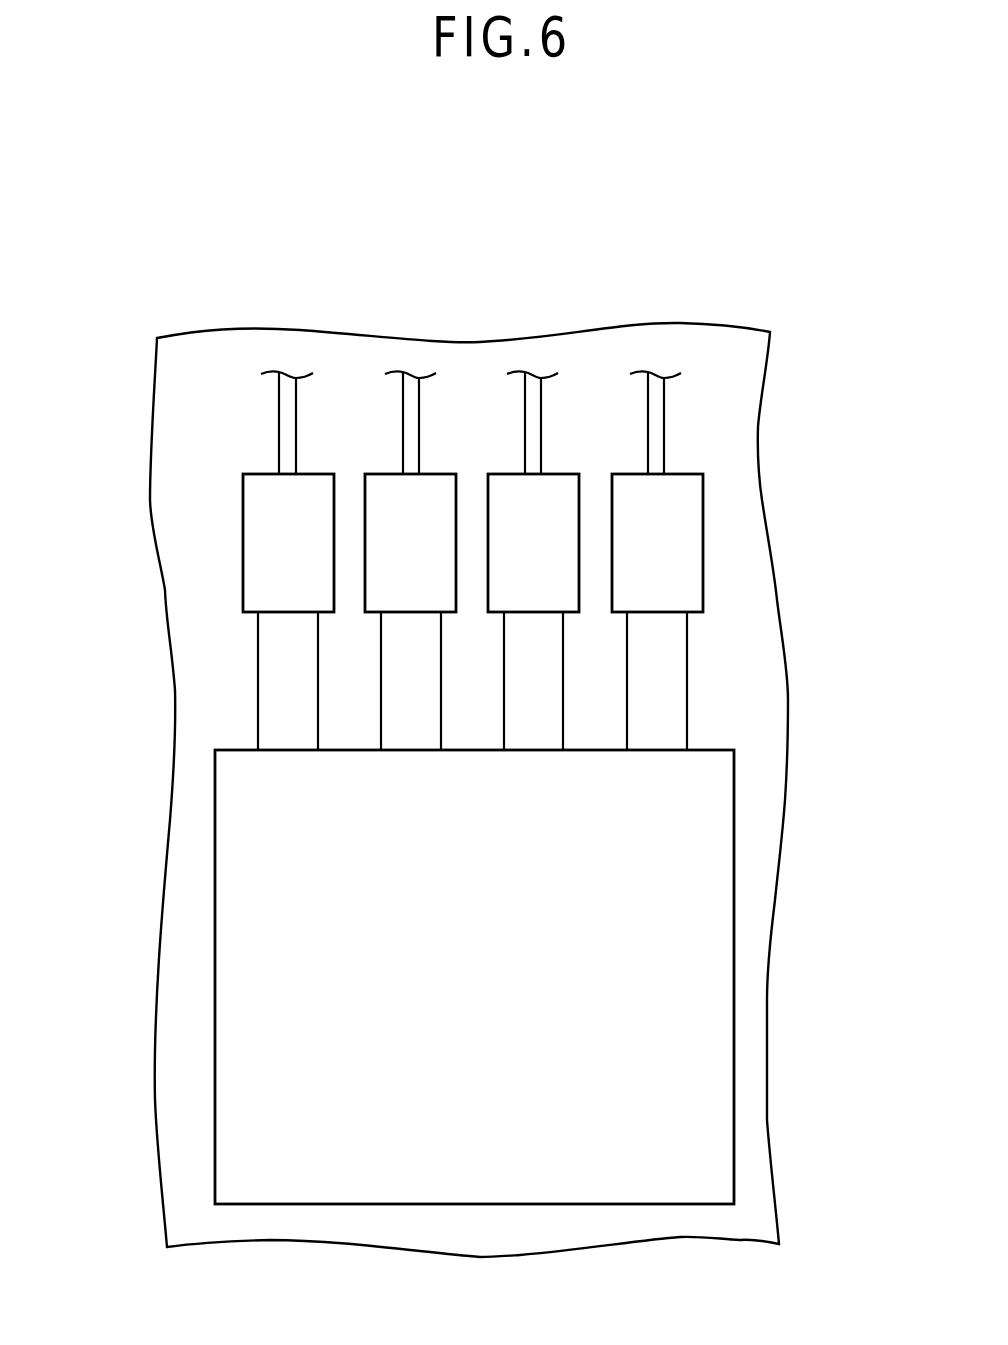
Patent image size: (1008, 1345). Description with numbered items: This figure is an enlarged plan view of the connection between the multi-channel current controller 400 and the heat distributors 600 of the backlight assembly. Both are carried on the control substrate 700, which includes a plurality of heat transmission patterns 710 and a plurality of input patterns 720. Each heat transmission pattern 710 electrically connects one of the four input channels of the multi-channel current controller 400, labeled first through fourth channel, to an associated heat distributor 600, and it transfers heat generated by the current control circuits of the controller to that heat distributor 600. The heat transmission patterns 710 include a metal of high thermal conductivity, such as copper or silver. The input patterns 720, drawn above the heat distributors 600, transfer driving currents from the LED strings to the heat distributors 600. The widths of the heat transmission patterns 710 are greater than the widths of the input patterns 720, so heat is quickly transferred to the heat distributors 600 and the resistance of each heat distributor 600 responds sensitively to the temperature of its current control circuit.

The multi-channel current controller 400 is at (707, 964).
The heat distributor 600 is at (460, 560).
The control substrate 700 is at (745, 559).
The heat transmission pattern 710 is at (657, 667).
The input pattern 720 is at (657, 429).